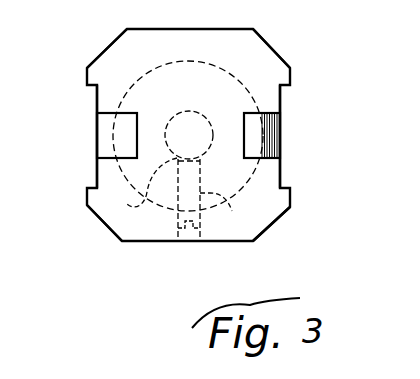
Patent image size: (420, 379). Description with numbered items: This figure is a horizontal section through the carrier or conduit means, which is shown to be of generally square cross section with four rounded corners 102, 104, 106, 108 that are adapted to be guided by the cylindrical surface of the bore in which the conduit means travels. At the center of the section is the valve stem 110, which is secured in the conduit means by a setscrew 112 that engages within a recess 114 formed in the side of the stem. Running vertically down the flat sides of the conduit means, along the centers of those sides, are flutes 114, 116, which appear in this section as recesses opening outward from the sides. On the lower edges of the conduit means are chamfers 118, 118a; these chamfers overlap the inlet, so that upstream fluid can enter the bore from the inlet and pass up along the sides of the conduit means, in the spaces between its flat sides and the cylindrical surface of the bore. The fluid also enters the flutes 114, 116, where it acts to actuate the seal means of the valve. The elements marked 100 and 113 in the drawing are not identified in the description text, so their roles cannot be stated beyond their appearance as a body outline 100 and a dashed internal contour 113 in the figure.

The insert body 100 is at (188, 135).
The rounded corner 102 is at (272, 49).
The rounded corner 104 is at (112, 43).
The rounded corner 106 is at (96, 216).
The rounded corner 108 is at (287, 210).
The valve stem 110 is at (183, 111).
The setscrew 112 is at (220, 205).
The internal cavity contour 113 is at (138, 207).
The flute 114 is at (280, 98).
The flute 116 is at (97, 96).
The chamfer 118 is at (268, 153).
The chamfer 118a is at (97, 128).